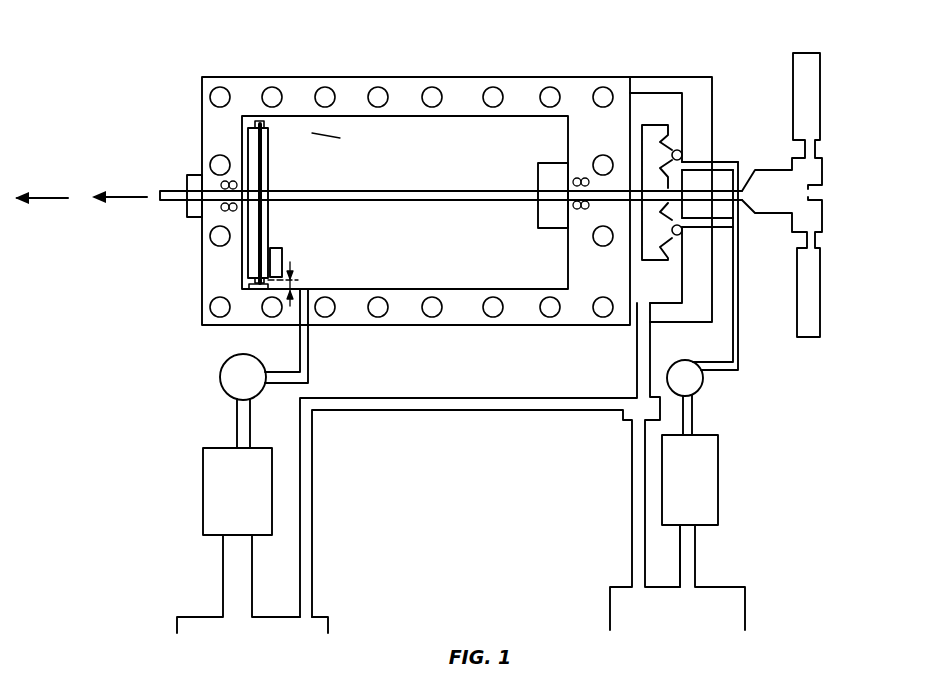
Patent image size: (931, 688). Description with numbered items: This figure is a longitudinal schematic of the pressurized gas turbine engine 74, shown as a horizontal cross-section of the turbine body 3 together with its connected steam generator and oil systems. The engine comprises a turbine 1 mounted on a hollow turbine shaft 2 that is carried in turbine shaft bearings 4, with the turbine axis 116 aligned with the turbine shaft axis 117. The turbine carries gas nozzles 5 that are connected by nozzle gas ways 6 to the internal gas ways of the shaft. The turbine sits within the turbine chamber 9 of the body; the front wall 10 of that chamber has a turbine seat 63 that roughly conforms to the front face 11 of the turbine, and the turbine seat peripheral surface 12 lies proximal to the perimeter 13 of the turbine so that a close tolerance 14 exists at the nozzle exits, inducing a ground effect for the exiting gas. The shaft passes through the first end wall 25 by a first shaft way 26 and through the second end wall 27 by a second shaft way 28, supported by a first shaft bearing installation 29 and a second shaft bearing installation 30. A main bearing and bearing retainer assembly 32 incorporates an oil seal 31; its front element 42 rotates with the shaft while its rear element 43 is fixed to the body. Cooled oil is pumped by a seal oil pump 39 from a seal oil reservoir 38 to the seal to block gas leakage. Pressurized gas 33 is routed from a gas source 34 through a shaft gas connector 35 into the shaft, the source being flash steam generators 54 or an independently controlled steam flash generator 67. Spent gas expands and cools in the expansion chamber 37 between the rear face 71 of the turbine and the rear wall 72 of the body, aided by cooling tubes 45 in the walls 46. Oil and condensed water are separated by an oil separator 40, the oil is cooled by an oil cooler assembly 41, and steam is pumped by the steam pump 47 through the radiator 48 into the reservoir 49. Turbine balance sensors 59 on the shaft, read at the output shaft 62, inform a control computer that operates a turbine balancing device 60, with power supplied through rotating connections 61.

The turbine 1 is at (260, 132).
The turbine shaft 2 is at (180, 197).
The turbine body 3 is at (585, 130).
The turbine shaft bearings 4 is at (240, 205).
The gas nozzles 5 is at (218, 292).
The nozzle gas ways 6 is at (263, 227).
The turbine chamber 9 is at (325, 135).
The front wall 10 is at (240, 152).
The front face 11 is at (233, 278).
The turbine seat peripheral surface 12 is at (247, 117).
The perimeter 13 is at (250, 140).
The close tolerance 14 is at (295, 285).
The first end wall 25 is at (604, 273).
The first shaft way 26 is at (580, 207).
The second end wall 27 is at (245, 277).
The second shaft way 28 is at (220, 207).
The first shaft bearing installation 29 is at (568, 243).
The second shaft bearing installation 30 is at (227, 187).
The oil seal 31 is at (681, 151).
The main bearing and bearing retainer assembly 32 is at (672, 262).
The pressurized gas 33 is at (697, 194).
The gas source 34 is at (825, 140).
The shaft gas connector 35 is at (768, 213).
The expansion chamber 37 is at (458, 245).
The seal oil reservoir 38 is at (718, 486).
The seal oil pump 39 is at (698, 392).
The oil separator 40 is at (627, 425).
The oil cooler assembly 41 is at (747, 612).
The front element 42 is at (684, 132).
The rear element 43 is at (700, 140).
The cooling tubes 45 is at (222, 317).
The walls 46 is at (243, 328).
The steam pump 47 is at (218, 380).
The radiator 48 is at (203, 492).
The reservoir 49 is at (202, 613).
The flash steam generators 54 is at (822, 100).
The turbine balance sensors 59 is at (182, 210).
The turbine balancing device 60 is at (288, 253).
The rotating connections 61 is at (538, 165).
The output shaft 62 is at (158, 196).
The turbine seat 63 is at (248, 262).
The steam flash generator 67 is at (822, 282).
The rear face 71 is at (268, 160).
The rear wall 72 is at (567, 130).
The pressurized gas turbine engine 74 is at (290, 77).
The turbine axis 116 is at (117, 200).
The turbine shaft axis 117 is at (52, 195).